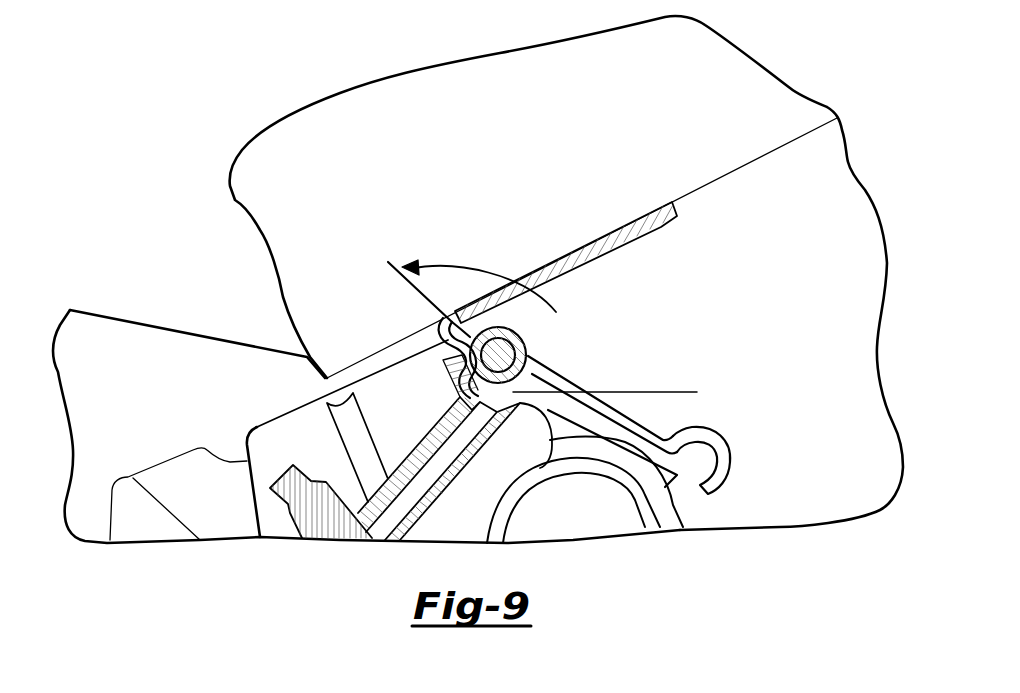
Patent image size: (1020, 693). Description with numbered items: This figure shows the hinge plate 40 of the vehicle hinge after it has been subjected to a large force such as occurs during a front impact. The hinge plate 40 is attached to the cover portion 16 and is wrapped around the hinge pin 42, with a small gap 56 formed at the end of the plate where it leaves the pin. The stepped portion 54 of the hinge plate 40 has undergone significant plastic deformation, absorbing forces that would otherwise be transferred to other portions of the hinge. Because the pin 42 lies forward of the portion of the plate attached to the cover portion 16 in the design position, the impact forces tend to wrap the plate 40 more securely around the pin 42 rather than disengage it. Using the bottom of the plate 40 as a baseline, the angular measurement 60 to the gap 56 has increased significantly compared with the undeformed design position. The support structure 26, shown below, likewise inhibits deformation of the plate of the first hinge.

The cover portion 16 is at (233, 199).
The support structure 26 is at (283, 414).
The hinge plate 40 is at (630, 243).
The hinge pin 42 is at (500, 362).
The stepped portion 54 is at (482, 355).
The gap 56 is at (480, 353).
The angular measurement 60 is at (602, 384).